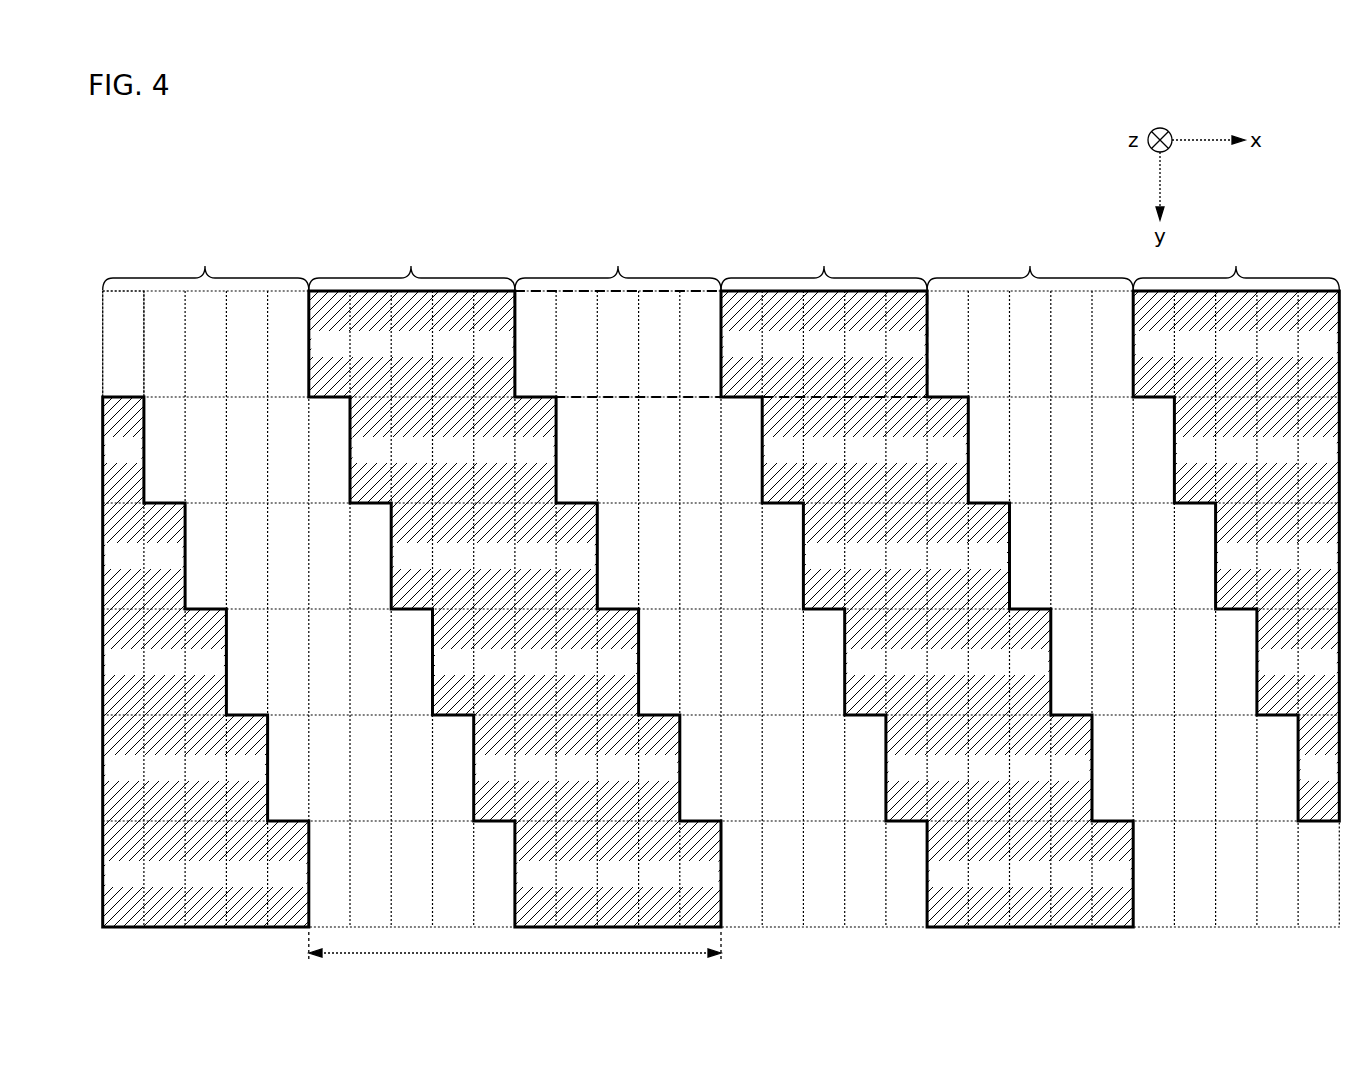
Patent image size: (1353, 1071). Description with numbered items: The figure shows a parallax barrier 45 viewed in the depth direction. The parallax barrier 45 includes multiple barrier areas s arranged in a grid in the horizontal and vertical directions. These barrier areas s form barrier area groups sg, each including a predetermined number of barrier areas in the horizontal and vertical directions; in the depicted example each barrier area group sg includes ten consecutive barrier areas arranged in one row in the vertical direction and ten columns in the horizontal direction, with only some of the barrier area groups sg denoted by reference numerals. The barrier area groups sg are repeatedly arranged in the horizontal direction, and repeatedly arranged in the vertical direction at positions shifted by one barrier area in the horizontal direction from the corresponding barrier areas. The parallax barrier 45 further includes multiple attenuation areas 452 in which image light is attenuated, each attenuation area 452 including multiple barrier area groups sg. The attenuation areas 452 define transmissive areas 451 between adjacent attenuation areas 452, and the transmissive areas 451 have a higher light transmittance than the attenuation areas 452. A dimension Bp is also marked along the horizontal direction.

The parallax barrier 45 is at (699, 537).
The transmissive area 451 is at (618, 264).
The attenuation area 452 is at (824, 264).
The barrier area s is at (120, 323).
The barrier area group sg is at (573, 290).
The pitch Bp is at (515, 959).